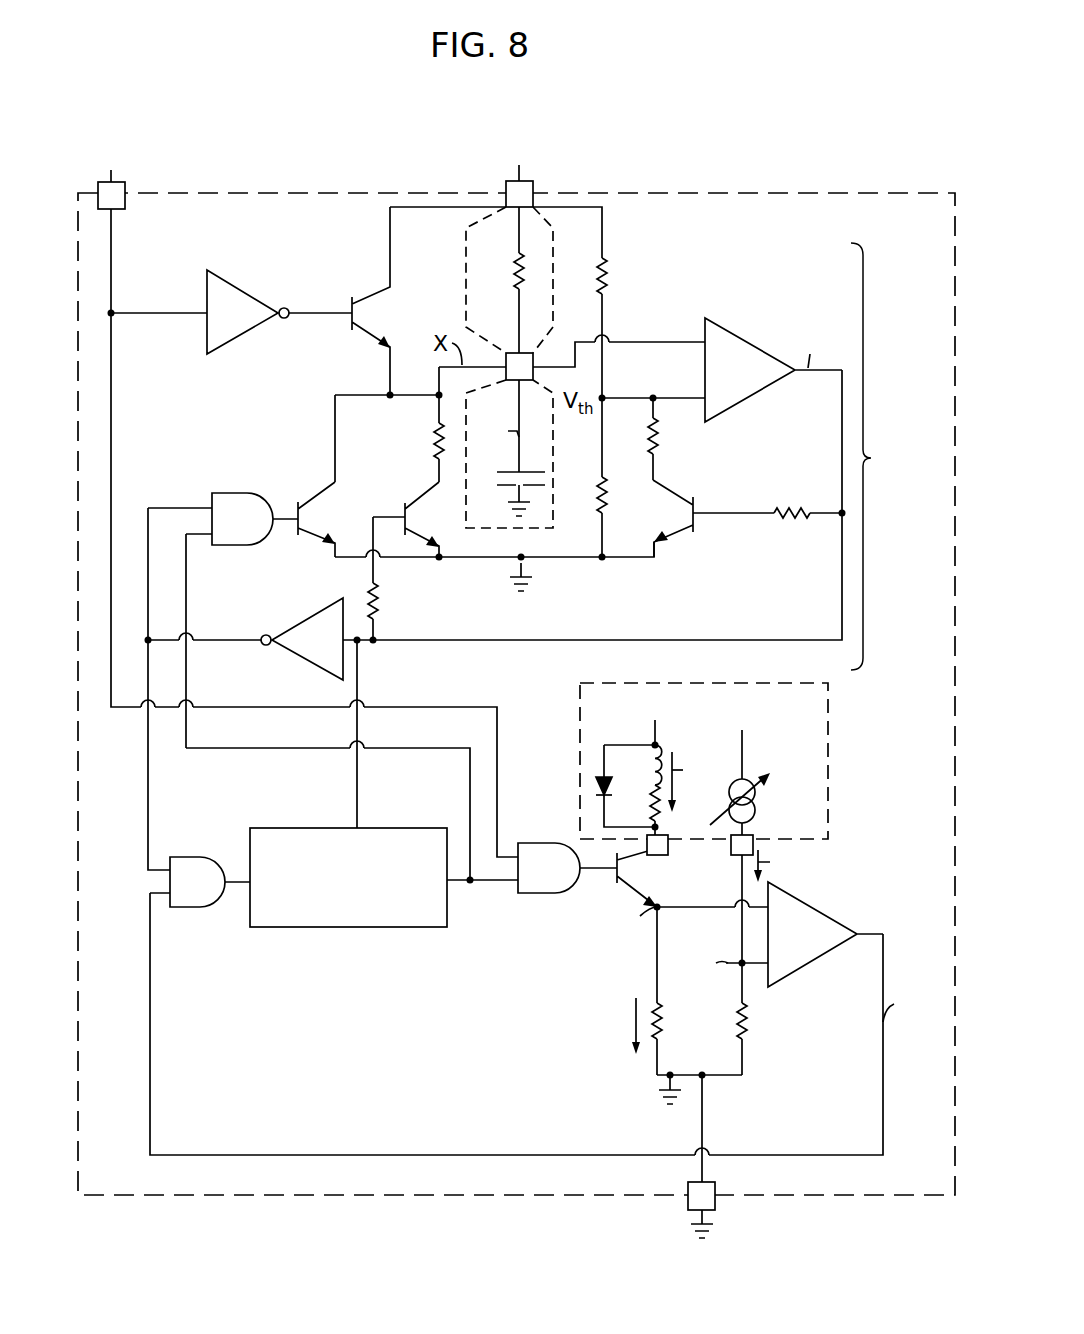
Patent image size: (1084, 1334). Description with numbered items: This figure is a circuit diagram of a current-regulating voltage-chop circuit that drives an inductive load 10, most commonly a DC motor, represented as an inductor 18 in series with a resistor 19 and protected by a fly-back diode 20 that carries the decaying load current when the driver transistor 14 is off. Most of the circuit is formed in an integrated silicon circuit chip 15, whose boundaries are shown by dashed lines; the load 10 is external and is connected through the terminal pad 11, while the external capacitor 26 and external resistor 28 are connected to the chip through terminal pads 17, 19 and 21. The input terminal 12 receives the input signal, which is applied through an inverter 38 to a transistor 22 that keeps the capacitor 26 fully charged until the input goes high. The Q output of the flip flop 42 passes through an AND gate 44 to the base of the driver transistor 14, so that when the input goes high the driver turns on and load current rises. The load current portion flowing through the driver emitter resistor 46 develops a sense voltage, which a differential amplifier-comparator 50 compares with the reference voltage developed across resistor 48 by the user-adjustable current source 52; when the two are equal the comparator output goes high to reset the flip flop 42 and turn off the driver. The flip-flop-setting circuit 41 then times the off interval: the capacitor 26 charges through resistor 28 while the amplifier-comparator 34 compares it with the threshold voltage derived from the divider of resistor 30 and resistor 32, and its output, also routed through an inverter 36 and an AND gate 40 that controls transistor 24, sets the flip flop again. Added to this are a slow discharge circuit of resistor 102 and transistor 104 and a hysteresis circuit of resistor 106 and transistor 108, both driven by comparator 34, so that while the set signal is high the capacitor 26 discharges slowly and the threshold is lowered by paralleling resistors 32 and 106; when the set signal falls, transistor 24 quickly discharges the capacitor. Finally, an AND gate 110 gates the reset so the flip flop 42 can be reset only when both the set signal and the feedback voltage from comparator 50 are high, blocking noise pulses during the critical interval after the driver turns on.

The inductive load 10 is at (582, 754).
The integrated circuit terminal pad 11 is at (668, 856).
The input terminal 12 is at (127, 185).
The driver transistor 14 is at (614, 877).
The integrated silicon circuit chip 15 is at (290, 192).
The terminal pad 17 is at (535, 186).
The inductor 18 is at (652, 768).
The resistor / terminal pad 19 is at (508, 353).
The fly-back diode 20 is at (594, 789).
The terminal pad 21 is at (716, 1188).
The transistor 22 is at (358, 313).
The transistor 24 is at (312, 515).
The capacitor 26 is at (497, 475).
The resistor 28 is at (513, 275).
The resistor 30 is at (610, 279).
The resistor 32 is at (609, 493).
The amplifier-comparator 34 is at (720, 385).
The inverter 36 is at (296, 653).
The inverter 38 is at (218, 326).
The AND gate 40 is at (220, 532).
The flip-flop-setting circuit 41 is at (877, 456).
The flip flop 42 is at (343, 915).
The AND gate 44 is at (536, 881).
The driver emitter resistor 46 is at (665, 1023).
The resistor 48 is at (750, 1025).
The differential amplifier-comparator 50 is at (786, 953).
The current source 52 is at (755, 801).
The resistor 102 is at (432, 428).
The transistor 104 is at (405, 504).
The resistor 106 is at (662, 447).
The transistor 108 is at (699, 503).
The AND gate 110 is at (175, 895).